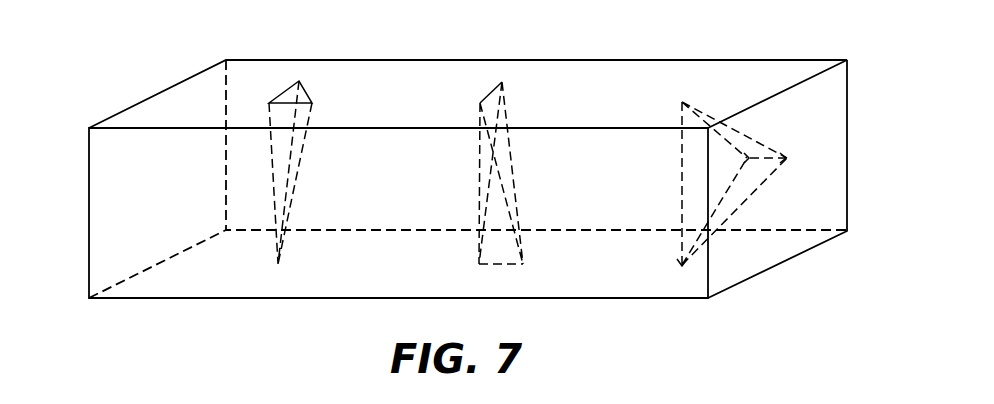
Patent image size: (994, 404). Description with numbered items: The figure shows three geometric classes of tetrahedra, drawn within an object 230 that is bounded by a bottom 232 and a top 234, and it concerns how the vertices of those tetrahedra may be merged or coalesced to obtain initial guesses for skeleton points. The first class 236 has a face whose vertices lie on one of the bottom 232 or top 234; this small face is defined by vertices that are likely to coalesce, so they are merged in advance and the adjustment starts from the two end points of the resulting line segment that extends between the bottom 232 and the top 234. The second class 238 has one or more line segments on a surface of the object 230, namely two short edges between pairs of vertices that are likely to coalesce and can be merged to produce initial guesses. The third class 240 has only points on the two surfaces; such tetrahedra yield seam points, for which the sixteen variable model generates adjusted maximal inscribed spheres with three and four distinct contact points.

The object 230 is at (164, 340).
The bottom 232 is at (318, 297).
The top 234 is at (393, 62).
The class of tetrahedra having a face on a surface 236 is at (291, 188).
The class of tetrahedra having line segments on a surface 238 is at (518, 214).
The class of tetrahedra having only points on surfaces 240 is at (758, 183).